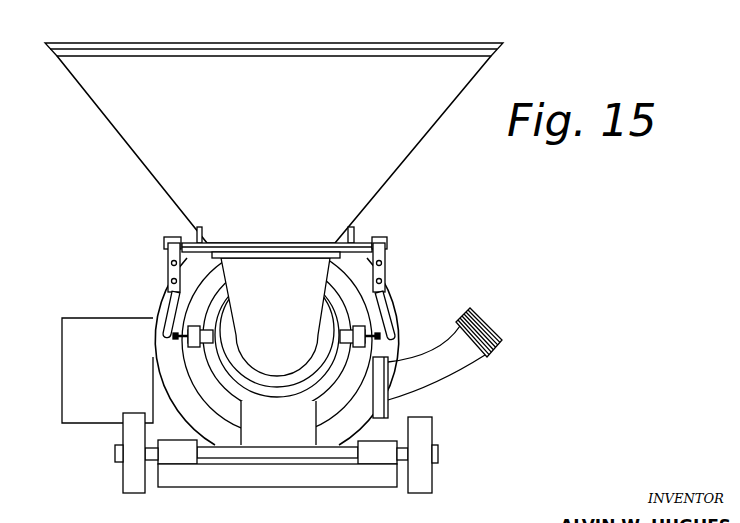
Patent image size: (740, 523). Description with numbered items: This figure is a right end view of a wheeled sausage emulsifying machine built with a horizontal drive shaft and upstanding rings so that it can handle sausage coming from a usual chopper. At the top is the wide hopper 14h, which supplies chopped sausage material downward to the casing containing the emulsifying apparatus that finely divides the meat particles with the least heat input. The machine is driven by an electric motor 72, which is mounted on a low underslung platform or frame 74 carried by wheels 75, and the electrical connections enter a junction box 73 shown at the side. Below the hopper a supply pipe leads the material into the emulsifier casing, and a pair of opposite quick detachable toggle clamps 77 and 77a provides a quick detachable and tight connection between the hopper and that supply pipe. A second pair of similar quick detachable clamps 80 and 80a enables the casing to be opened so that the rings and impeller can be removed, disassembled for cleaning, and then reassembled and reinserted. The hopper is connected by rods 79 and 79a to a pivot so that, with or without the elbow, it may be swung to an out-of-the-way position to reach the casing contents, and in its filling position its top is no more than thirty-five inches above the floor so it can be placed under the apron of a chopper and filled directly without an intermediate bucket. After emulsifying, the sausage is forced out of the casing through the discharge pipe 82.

The hopper 14h is at (303, 135).
The electric motor 72 is at (388, 296).
The junction box 73 is at (75, 342).
The platform or frame 74 is at (248, 477).
The wheels 75 is at (129, 484).
The quick detachable clamp 77 is at (170, 312).
The quick detachable clamp 77a is at (384, 318).
The rod 79 is at (185, 241).
The rod 79a is at (363, 238).
The quick detachable clamp 80 is at (177, 344).
The quick detachable clamp 80a is at (373, 337).
The discharge pipe 82 is at (458, 362).